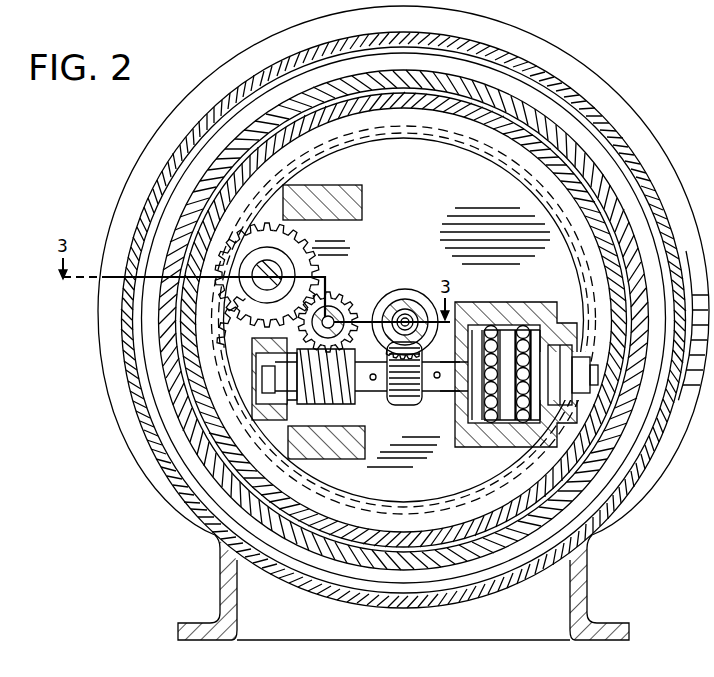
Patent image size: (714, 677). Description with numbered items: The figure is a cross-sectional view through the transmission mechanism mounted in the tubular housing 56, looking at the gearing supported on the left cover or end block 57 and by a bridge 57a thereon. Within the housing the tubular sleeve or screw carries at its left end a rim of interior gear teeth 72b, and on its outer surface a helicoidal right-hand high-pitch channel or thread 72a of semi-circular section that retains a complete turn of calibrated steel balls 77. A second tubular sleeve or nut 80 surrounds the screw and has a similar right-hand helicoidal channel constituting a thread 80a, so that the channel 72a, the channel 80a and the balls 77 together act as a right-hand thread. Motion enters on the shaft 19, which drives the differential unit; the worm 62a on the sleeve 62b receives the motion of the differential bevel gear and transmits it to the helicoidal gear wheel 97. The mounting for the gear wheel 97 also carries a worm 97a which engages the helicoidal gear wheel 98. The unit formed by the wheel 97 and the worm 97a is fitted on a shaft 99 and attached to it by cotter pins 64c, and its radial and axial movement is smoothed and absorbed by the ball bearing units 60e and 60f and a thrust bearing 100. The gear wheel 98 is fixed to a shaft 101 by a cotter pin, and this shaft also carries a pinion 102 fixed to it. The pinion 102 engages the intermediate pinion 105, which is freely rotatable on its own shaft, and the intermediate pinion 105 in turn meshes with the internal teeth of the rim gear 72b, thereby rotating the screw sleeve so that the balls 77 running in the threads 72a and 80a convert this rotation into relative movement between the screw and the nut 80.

The shaft 19 is at (405, 312).
The tubular housing 56 is at (632, 492).
The cover or end block 57 is at (420, 210).
The bridge 57a is at (372, 162).
The ball bearing unit 60e is at (280, 402).
The ball bearing unit 60f is at (553, 324).
The worm 62a is at (418, 294).
The sleeve 62b is at (386, 306).
The cotter pins 64c is at (472, 430).
The helicoidal channel or thread 72a is at (393, 94).
The rim of interior gear teeth 72b is at (322, 148).
The calibrated steel balls 77 is at (180, 326).
The tubular sleeve or nut 80 is at (498, 100).
The helicoidal channel or thread 80a is at (543, 142).
The helicoidal gear wheel 97 is at (412, 400).
The worm 97a is at (350, 404).
The helicoidal gear wheel 98 is at (336, 302).
The shaft 99 is at (262, 356).
The thrust bearing 100 is at (525, 303).
The shaft 101 is at (302, 275).
The pinion 102 is at (292, 296).
The intermediate pinion 105 is at (305, 250).